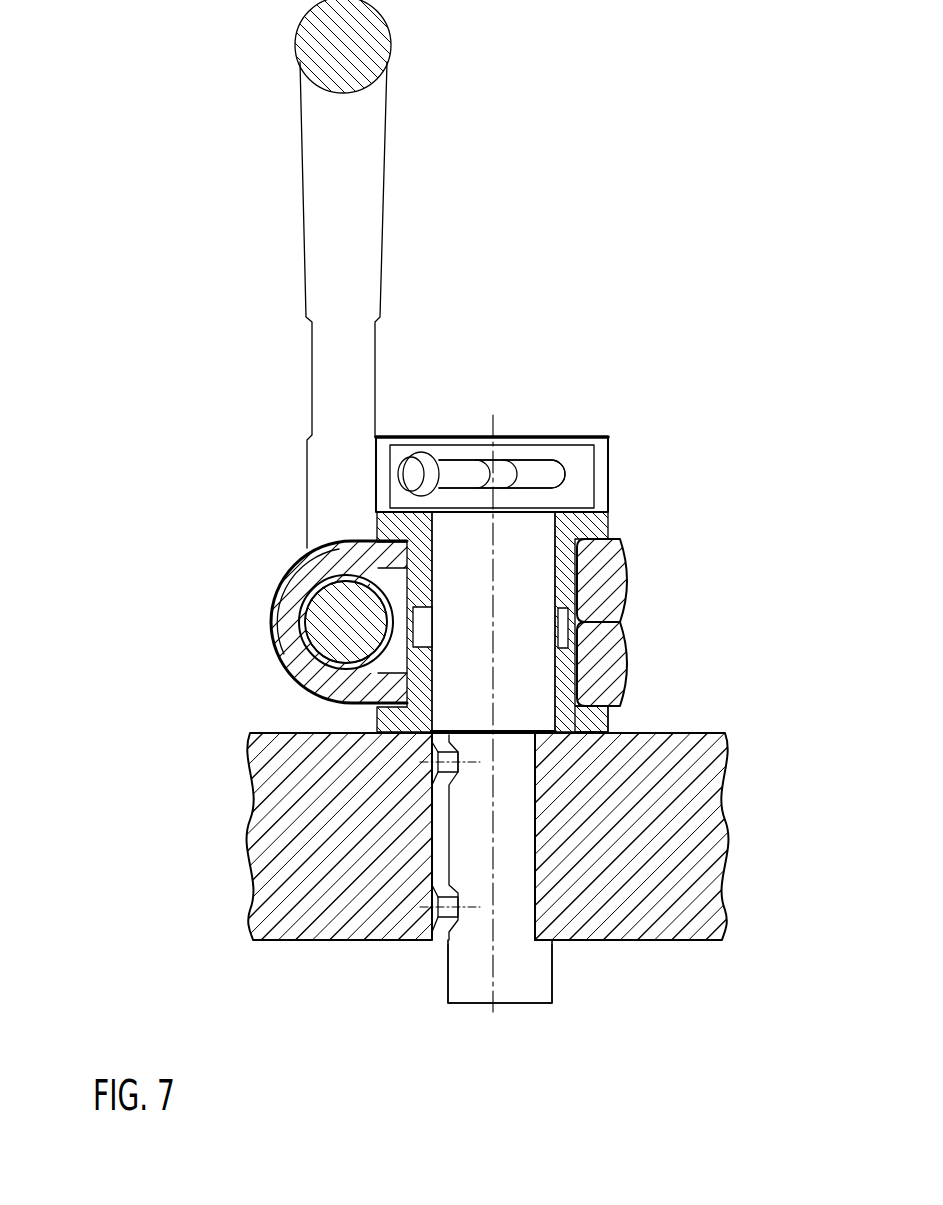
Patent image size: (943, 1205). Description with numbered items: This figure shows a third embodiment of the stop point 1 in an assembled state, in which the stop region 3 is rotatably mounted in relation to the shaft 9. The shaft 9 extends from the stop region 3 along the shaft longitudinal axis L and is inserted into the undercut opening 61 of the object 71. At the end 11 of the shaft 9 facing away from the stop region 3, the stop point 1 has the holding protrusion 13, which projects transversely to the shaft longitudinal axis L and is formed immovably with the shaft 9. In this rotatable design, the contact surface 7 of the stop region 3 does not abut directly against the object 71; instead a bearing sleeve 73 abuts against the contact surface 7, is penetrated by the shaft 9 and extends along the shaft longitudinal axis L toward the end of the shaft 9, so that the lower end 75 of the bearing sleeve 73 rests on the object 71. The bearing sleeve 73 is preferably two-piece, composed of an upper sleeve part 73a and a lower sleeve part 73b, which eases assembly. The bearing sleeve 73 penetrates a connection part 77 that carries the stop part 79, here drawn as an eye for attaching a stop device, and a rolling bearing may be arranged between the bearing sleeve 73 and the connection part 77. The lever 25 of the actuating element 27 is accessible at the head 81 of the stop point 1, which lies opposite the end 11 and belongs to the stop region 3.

The stop point 1 is at (620, 258).
The stop region 3 is at (250, 667).
The contact surface 7 is at (608, 535).
The shaft 9 is at (438, 925).
The end 11 is at (437, 985).
The holding protrusion 13 is at (538, 988).
The lever 25 is at (418, 452).
The actuating element 27 is at (502, 474).
The undercut opening 61 is at (542, 890).
The object 71 is at (710, 748).
The bearing sleeve 73 is at (622, 548).
The upper sleeve part 73a is at (597, 585).
The lower sleeve part 73b is at (597, 656).
The lower end of the bearing sleeve 75 is at (600, 718).
The connection part 77 is at (292, 620).
The stop part 79 is at (322, 135).
The head 81 is at (596, 440).
The shaft longitudinal axis L is at (494, 1006).